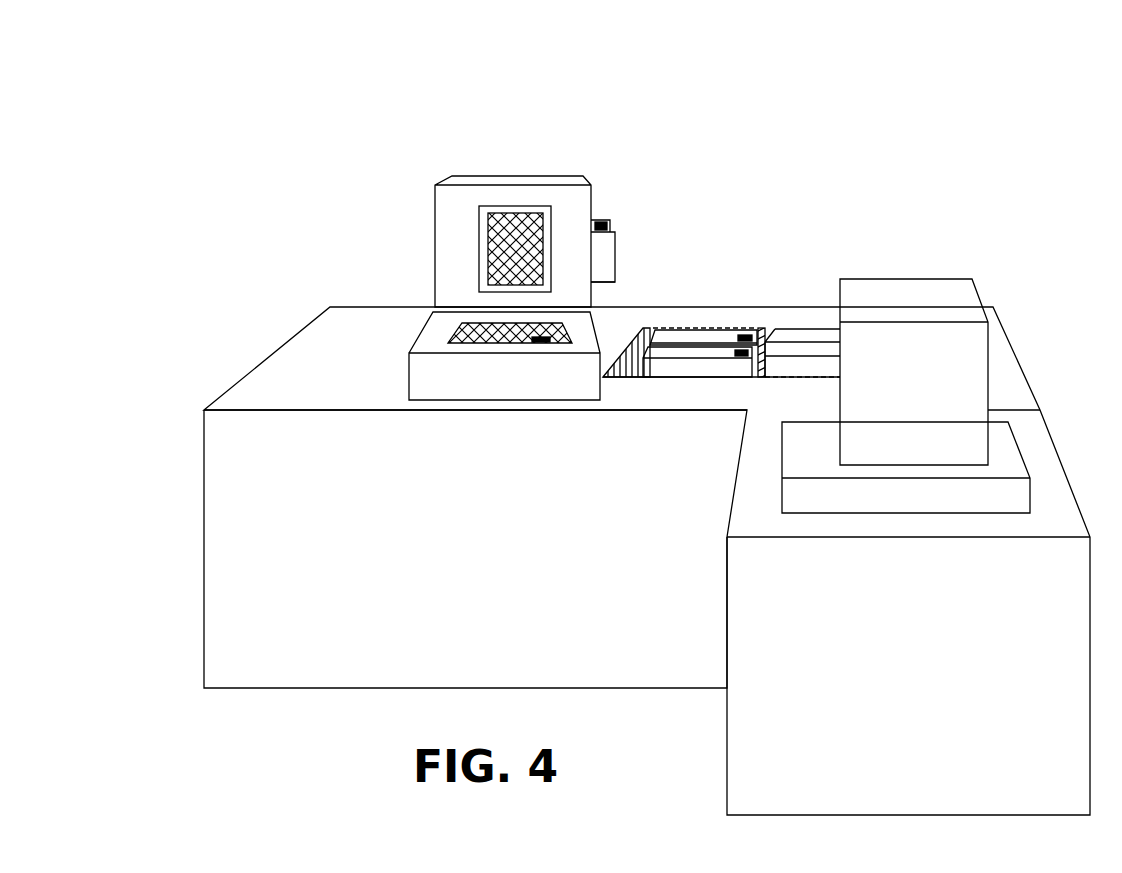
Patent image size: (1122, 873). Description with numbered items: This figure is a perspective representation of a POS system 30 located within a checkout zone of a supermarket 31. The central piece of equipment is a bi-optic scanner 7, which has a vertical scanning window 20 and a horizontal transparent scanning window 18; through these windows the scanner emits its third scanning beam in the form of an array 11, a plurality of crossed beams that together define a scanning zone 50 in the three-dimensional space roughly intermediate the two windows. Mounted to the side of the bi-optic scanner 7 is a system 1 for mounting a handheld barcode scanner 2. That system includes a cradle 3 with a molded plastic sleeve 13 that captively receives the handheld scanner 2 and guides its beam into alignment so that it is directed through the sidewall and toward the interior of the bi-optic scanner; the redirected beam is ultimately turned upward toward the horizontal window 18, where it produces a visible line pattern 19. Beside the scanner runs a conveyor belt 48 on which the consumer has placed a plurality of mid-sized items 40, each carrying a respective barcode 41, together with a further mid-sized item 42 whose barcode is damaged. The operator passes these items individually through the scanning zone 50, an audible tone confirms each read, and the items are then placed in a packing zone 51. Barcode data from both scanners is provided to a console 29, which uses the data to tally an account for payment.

The system 1 is at (650, 215).
The handheld barcode scanner 2 is at (602, 222).
The cradle 3 is at (610, 240).
The bi-optic scanner 7 is at (448, 197).
The array 11 is at (490, 246).
The molded plastic sleeve 13 is at (613, 275).
The horizontal transparent scanning window 18 is at (462, 330).
The visible line pattern 19 is at (540, 343).
The vertical scanning window 20 is at (542, 208).
The console 29 is at (915, 293).
The POS system 30 is at (740, 103).
The supermarket 31 is at (480, 95).
The mid-sized items 40 is at (680, 337).
The barcode 41 is at (747, 333).
The mid-sized item 42 is at (792, 370).
The conveyor belt 48 is at (622, 376).
The scanning zone 50 is at (458, 293).
The packing zone 51 is at (285, 365).